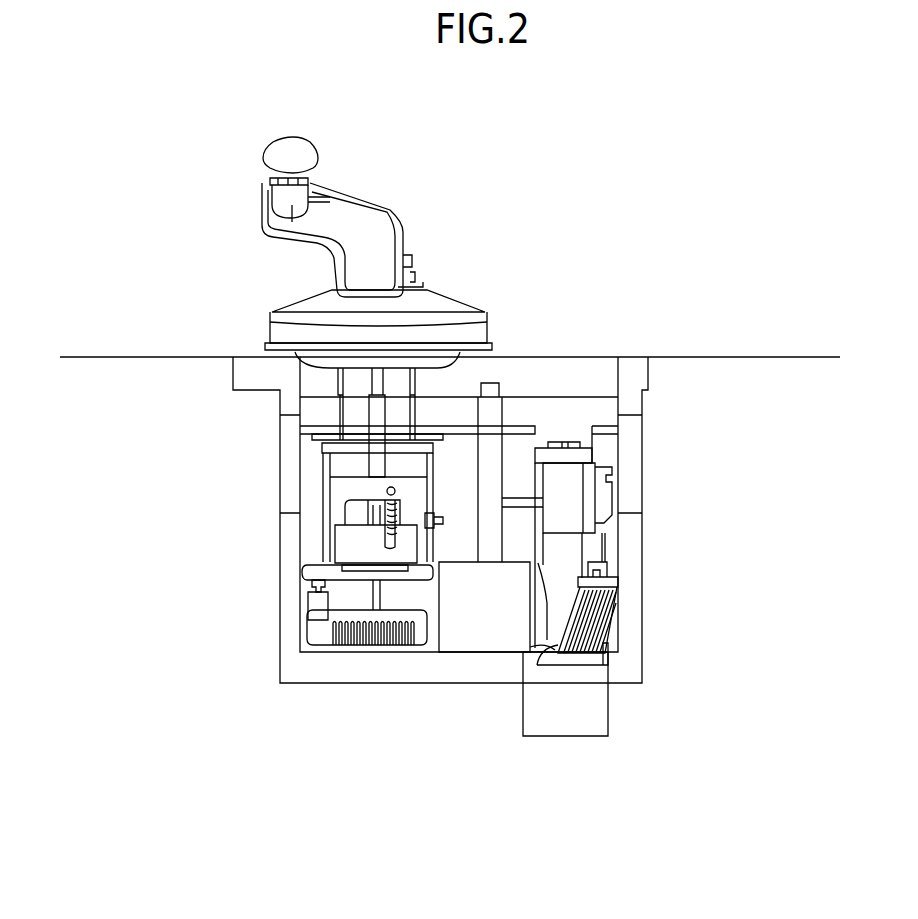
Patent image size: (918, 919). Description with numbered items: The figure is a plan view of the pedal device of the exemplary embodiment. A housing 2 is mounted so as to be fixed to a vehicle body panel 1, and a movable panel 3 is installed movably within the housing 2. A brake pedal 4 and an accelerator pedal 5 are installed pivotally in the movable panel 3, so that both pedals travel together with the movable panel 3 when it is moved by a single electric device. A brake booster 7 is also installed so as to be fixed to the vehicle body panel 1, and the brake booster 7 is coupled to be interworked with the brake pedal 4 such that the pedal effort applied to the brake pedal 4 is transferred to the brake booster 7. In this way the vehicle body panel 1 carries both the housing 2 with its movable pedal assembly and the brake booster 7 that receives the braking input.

The vehicle body panel 1 is at (150, 357).
The housing 2 is at (290, 617).
The movable panel 3 is at (532, 408).
The brake pedal 4 is at (360, 638).
The accelerator pedal 5 is at (600, 612).
The brake booster 7 is at (365, 227).